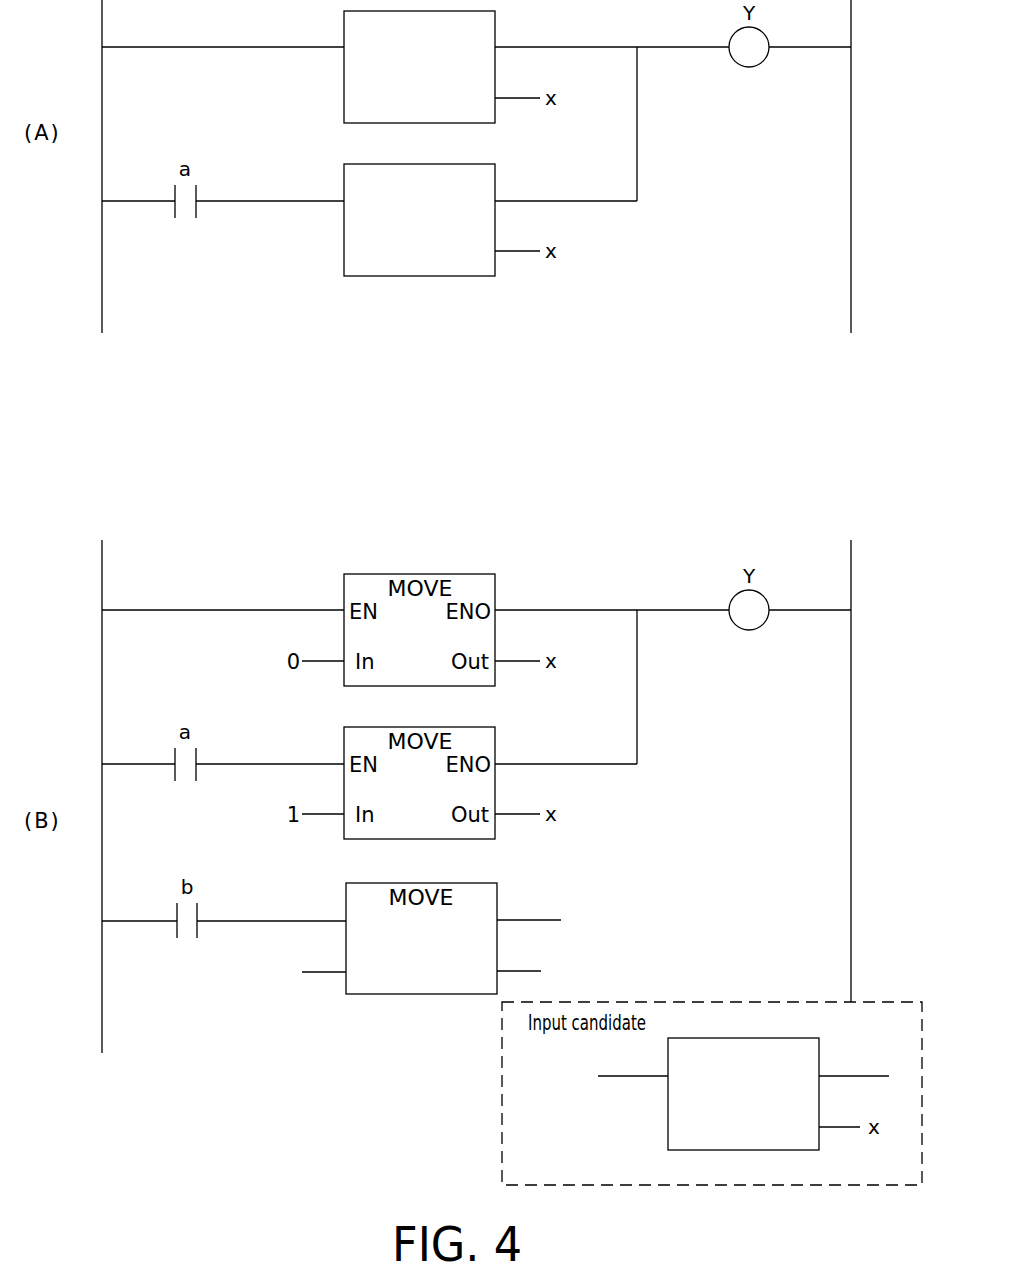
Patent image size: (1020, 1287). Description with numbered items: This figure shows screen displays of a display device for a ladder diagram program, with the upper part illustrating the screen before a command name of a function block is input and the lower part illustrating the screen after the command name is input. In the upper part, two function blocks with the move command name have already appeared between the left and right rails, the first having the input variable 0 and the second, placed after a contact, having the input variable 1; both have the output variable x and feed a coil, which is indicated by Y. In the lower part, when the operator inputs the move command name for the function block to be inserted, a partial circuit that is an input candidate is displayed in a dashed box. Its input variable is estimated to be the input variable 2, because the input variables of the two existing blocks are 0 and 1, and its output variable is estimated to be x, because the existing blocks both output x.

The input variable 0 is at (344, 98).
The input variable 1 is at (344, 251).
The input variable 2 is at (668, 1127).